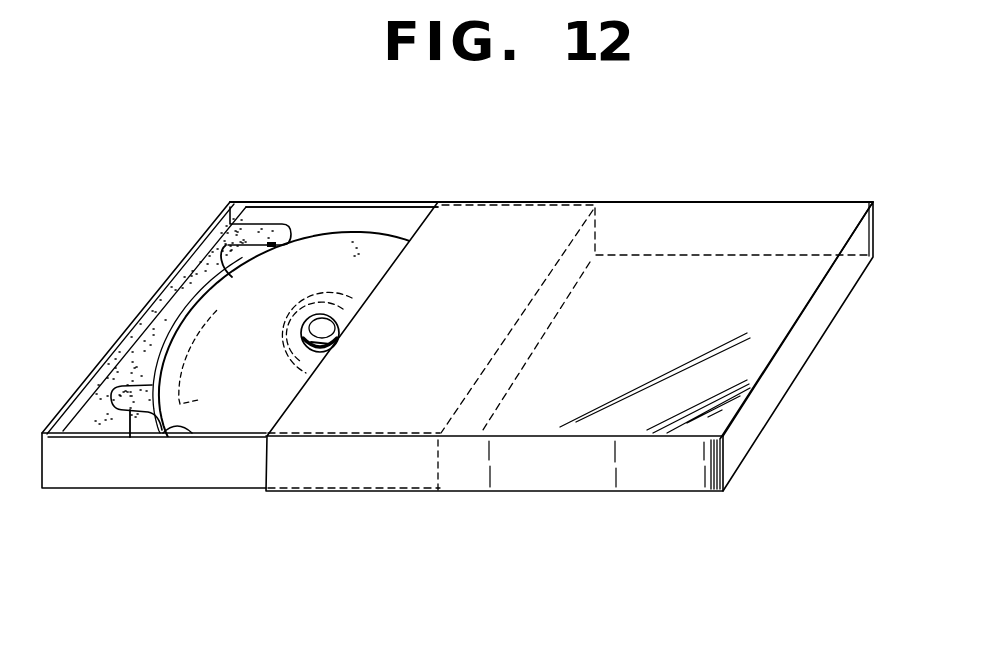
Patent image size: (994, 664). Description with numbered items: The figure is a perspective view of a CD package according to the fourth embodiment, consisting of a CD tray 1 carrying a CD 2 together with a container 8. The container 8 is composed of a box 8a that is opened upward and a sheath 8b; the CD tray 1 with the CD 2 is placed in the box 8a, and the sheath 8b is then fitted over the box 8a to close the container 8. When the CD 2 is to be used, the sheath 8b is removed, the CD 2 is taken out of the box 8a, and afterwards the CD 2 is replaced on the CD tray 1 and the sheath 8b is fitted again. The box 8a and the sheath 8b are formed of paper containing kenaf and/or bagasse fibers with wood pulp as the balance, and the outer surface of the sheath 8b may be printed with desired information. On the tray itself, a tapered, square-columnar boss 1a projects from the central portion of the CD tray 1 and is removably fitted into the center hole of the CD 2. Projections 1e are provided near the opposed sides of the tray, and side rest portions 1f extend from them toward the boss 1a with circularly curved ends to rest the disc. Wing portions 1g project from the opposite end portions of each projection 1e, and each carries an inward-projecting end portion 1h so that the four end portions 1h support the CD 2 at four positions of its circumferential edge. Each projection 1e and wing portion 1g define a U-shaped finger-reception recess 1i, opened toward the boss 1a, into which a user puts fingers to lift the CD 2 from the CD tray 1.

The CD tray 1 is at (148, 348).
The boss 1a is at (339, 329).
The projection 1e is at (187, 284).
The side rest portion 1f is at (200, 350).
The wing portion 1g is at (248, 225).
The inward-projecting end portion 1h is at (266, 246).
The finger-reception recess 1i is at (232, 256).
The CD 2 is at (377, 251).
The container 8 is at (587, 193).
The box 8a is at (340, 204).
The sheath 8b is at (682, 210).